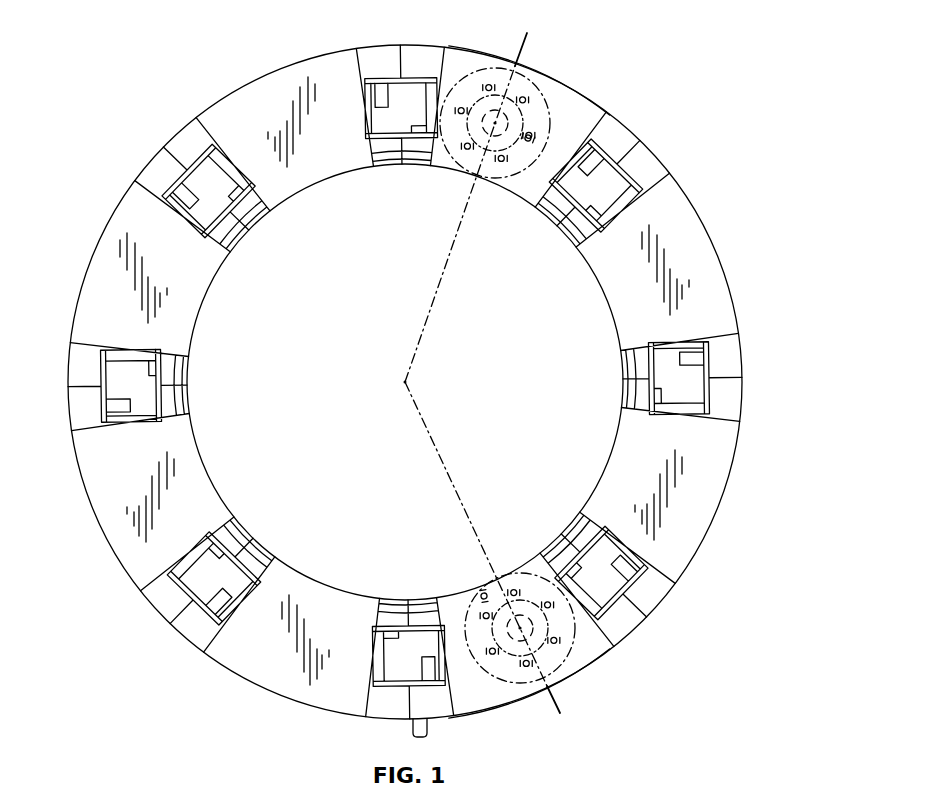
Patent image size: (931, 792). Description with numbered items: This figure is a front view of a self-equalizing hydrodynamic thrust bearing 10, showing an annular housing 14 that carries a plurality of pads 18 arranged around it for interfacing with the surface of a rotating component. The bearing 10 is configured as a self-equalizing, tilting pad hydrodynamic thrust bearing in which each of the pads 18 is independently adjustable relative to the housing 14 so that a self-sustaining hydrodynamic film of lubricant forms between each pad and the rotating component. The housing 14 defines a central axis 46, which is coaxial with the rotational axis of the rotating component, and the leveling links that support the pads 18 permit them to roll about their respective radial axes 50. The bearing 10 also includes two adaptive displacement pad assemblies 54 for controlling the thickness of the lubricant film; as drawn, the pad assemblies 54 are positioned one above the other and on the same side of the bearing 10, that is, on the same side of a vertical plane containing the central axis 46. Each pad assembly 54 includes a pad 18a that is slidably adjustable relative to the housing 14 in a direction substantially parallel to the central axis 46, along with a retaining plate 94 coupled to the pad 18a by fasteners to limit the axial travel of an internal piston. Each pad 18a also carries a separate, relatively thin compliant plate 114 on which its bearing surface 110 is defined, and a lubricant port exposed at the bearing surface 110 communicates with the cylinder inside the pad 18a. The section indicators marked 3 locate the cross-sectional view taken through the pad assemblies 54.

The self-equalizing hydrodynamic thrust bearing 10 is at (722, 90).
The housing 14 is at (660, 160).
The pads 18 is at (252, 78).
The pad 18a is at (590, 100).
The central axis 46 is at (403, 383).
The radial axes 50 is at (450, 243).
The adaptive displacement pad assemblies 54 is at (632, 110).
The retaining plate 94 is at (532, 172).
The bearing surface 110 is at (557, 133).
The compliant plate 114 is at (440, 158).
The section line 3- 3 is at (530, 50).